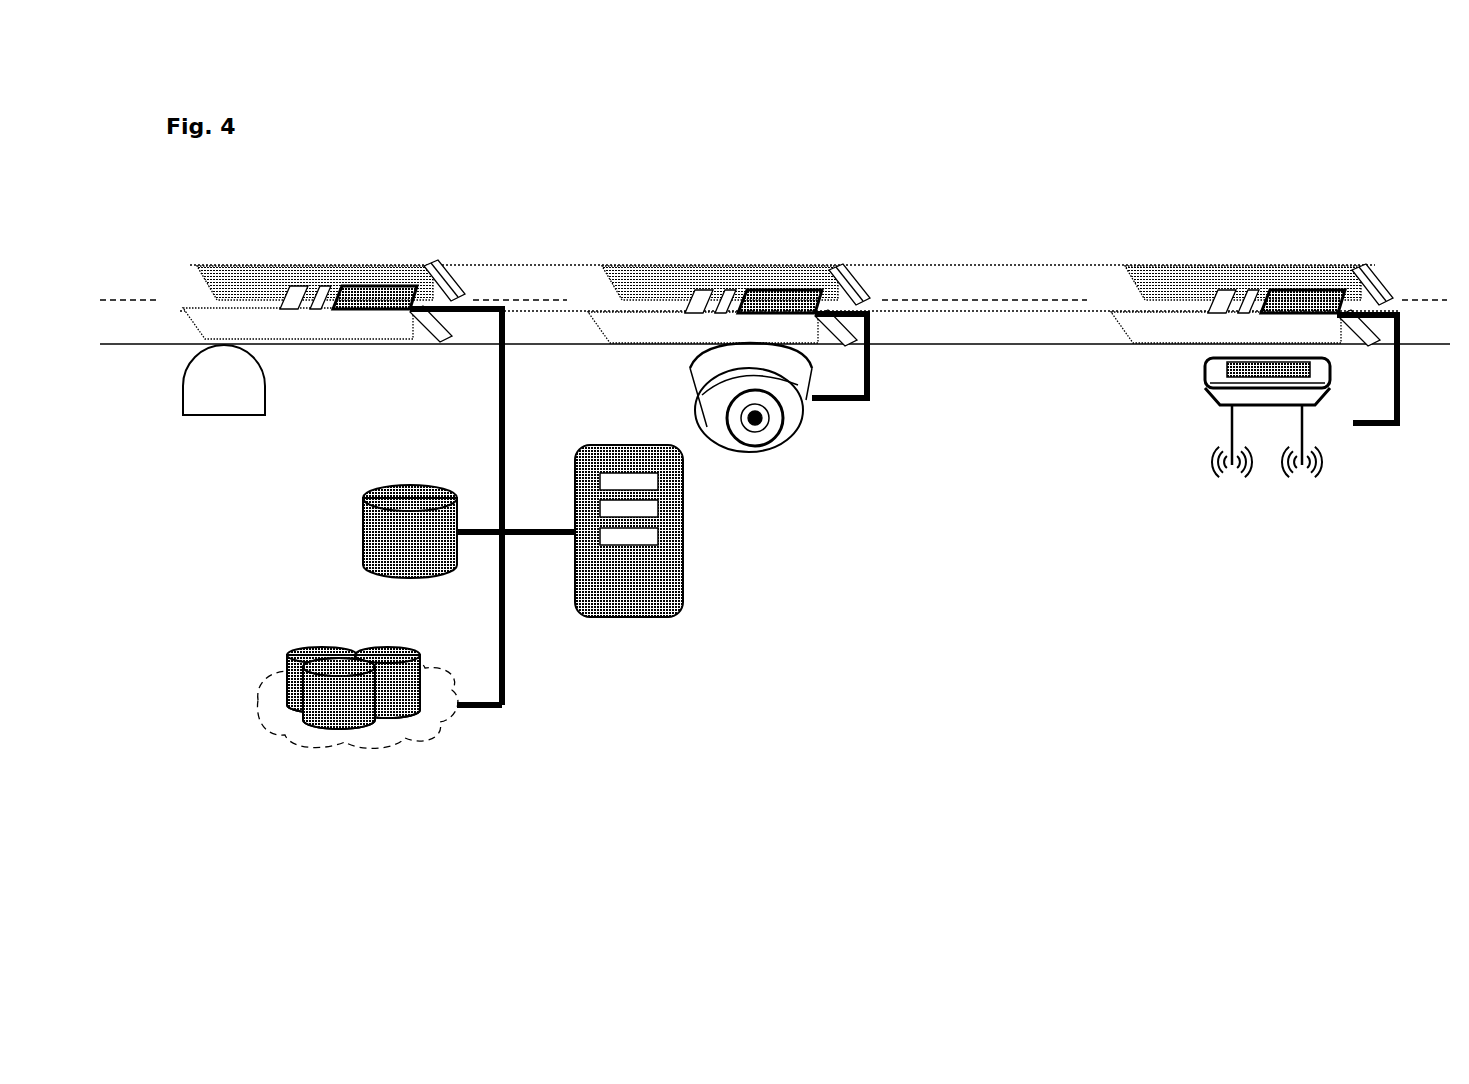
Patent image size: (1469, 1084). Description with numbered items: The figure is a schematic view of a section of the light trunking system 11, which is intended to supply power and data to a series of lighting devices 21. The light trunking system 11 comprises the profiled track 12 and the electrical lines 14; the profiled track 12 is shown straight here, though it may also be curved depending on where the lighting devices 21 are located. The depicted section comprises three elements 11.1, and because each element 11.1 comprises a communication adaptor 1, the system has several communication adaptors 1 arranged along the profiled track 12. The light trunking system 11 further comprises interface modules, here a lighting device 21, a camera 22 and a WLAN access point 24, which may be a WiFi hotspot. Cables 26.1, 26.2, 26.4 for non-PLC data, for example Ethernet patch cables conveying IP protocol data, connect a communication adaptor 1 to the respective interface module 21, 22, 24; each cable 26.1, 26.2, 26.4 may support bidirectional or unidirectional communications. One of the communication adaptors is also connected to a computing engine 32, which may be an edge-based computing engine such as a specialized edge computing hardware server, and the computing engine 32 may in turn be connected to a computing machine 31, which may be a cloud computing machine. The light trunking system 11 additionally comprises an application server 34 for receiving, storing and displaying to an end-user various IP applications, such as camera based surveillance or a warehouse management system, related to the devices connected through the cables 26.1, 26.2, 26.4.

The communication adaptor 1 is at (376, 287).
The light trunking system 11 is at (1098, 636).
The element 11.1 is at (313, 239).
The profiled track 12 is at (1138, 330).
The electrical lines 14 is at (595, 300).
The lighting device 21 is at (222, 398).
The camera 22 is at (765, 437).
The WLAN access point 24 is at (1213, 377).
The cable 26.1 is at (504, 380).
The cable 26.2 is at (869, 383).
The cable 26.4 is at (1399, 392).
The computing machine 31 is at (290, 670).
The computing engine 32 is at (363, 526).
The application server 34 is at (670, 582).